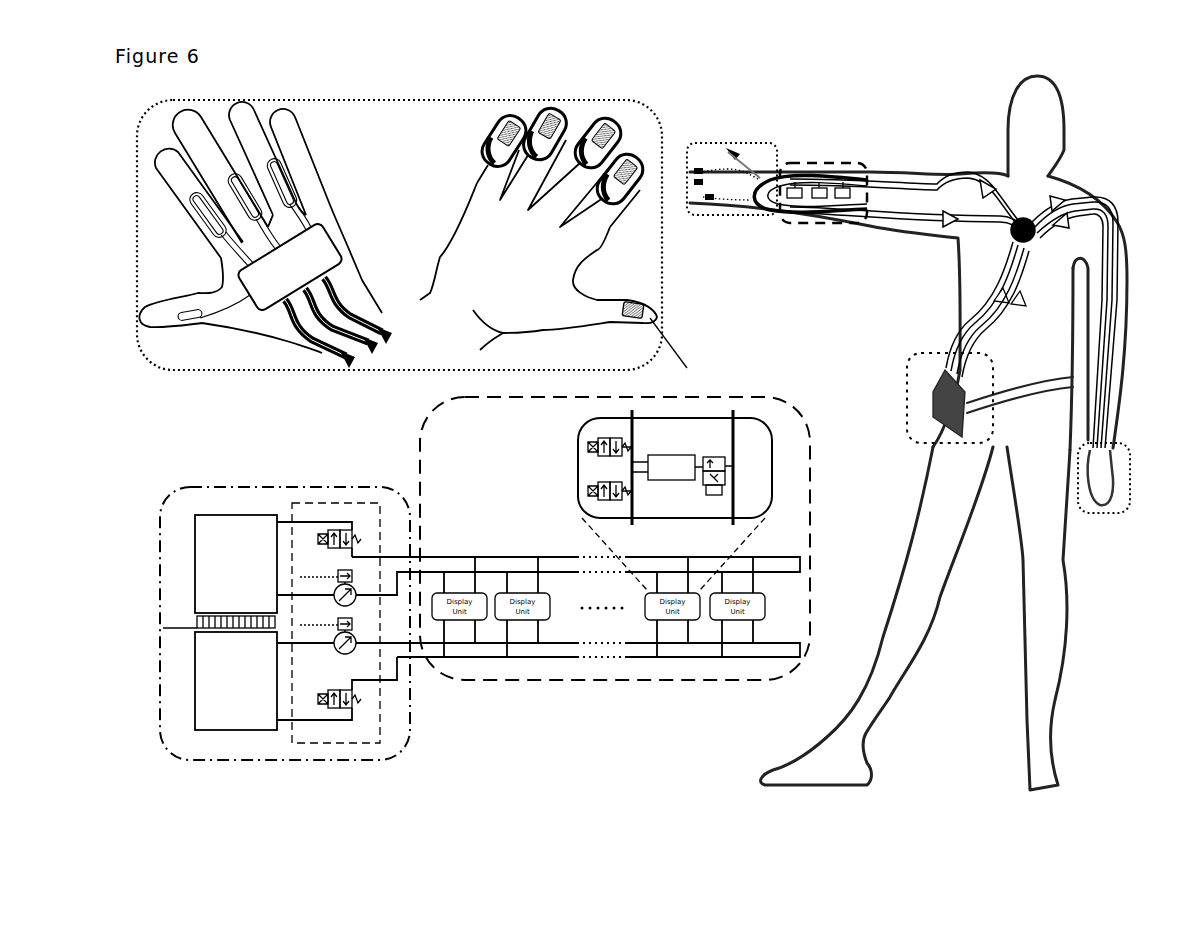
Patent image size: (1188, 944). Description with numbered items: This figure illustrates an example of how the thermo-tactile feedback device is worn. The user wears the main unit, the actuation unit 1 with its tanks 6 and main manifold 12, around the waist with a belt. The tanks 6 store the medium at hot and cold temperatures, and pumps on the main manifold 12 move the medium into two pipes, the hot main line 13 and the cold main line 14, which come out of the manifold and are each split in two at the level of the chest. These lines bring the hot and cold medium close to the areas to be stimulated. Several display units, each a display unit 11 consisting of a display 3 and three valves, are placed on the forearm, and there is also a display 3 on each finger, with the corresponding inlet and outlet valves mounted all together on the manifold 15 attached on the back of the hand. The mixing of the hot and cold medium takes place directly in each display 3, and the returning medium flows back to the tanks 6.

The actuation unit 1 is at (287, 486).
The display 3 is at (641, 166).
The tanks 6 is at (933, 410).
The display unit 11 is at (753, 438).
The main manifold 12 is at (937, 378).
The hot main line 13 is at (953, 320).
The cold main line 14 is at (957, 340).
The manifold 15 is at (333, 240).